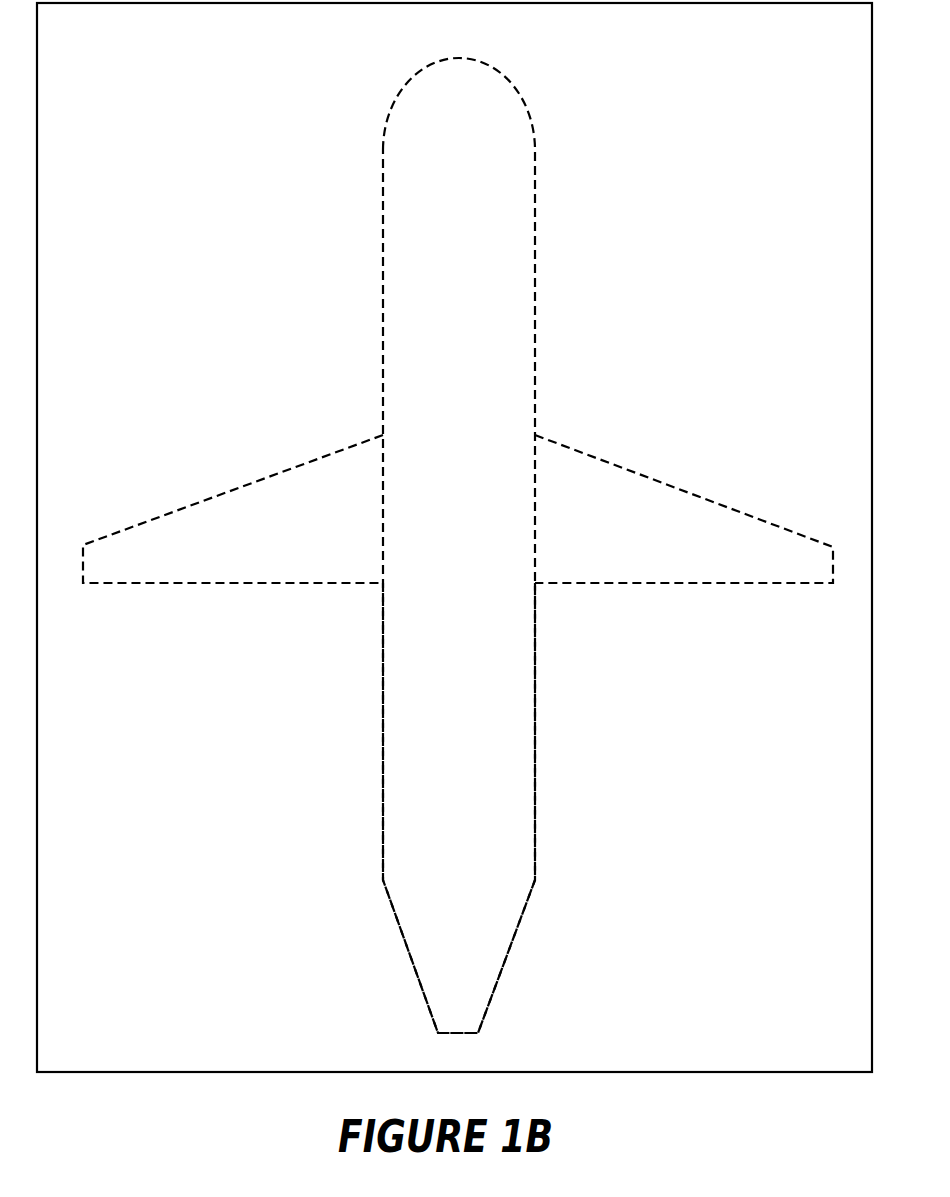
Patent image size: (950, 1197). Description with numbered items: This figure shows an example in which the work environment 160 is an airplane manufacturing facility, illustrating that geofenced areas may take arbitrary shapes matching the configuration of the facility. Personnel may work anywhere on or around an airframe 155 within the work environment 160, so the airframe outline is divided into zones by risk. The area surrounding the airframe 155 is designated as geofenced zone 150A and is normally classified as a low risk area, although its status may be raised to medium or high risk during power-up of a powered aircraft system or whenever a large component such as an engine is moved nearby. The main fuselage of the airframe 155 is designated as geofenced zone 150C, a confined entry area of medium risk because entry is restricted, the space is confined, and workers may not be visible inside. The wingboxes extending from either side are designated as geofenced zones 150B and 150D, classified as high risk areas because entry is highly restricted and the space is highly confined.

The geofenced zone 150A is at (454, 537).
The geofenced zone 150B is at (233, 509).
The geofenced zone 150C is at (459, 808).
The geofenced zone 150D is at (684, 509).
The airframe 155 is at (535, 350).
The work environment 160 is at (531, 545).